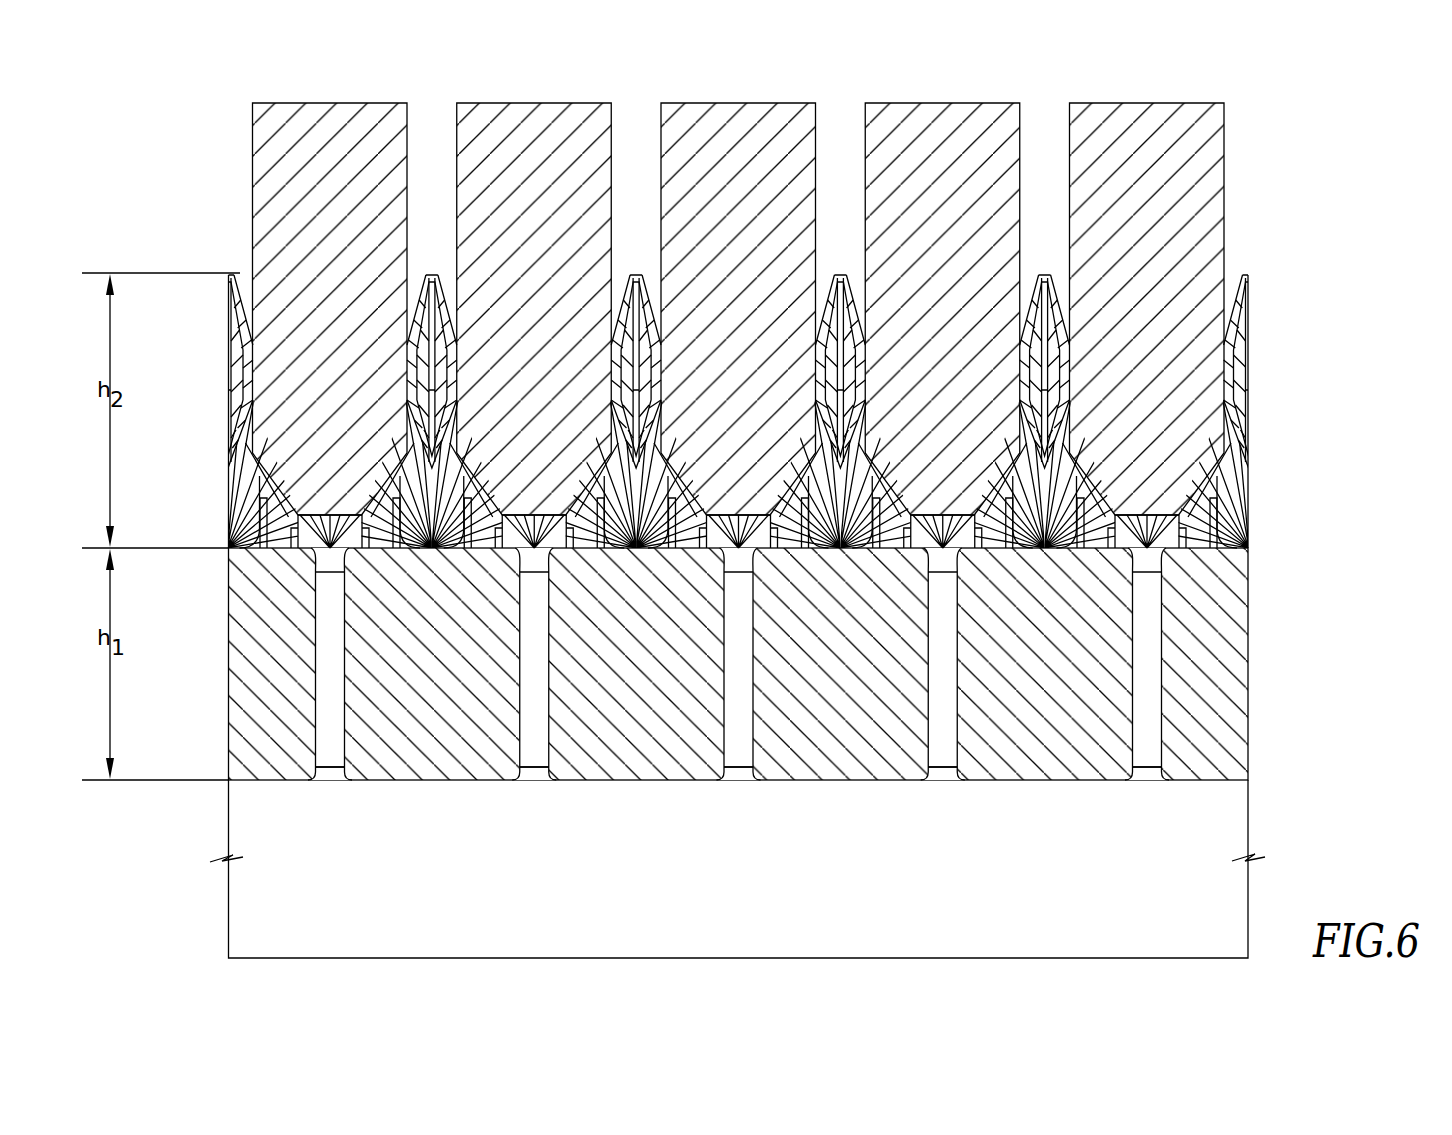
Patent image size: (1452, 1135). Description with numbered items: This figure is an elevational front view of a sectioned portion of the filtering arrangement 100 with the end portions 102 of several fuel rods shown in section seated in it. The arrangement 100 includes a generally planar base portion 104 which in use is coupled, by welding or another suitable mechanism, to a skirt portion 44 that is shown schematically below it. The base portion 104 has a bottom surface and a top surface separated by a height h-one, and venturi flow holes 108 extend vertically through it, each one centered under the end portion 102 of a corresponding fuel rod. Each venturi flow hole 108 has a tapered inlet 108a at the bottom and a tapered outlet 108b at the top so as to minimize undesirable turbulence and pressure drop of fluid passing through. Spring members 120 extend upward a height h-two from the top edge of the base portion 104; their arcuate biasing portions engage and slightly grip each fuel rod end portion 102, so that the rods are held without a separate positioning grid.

The filtering arrangement 100 is at (1302, 353).
The end portions of fuel rods 102 is at (334, 118).
The base portion 104 is at (1305, 636).
The venturi flow holes 108 is at (332, 684).
The tapered inlet 108a is at (329, 815).
The tapered outlet 108b is at (328, 514).
The spring members 120 is at (236, 271).
The skirt portion 44 is at (1222, 833).